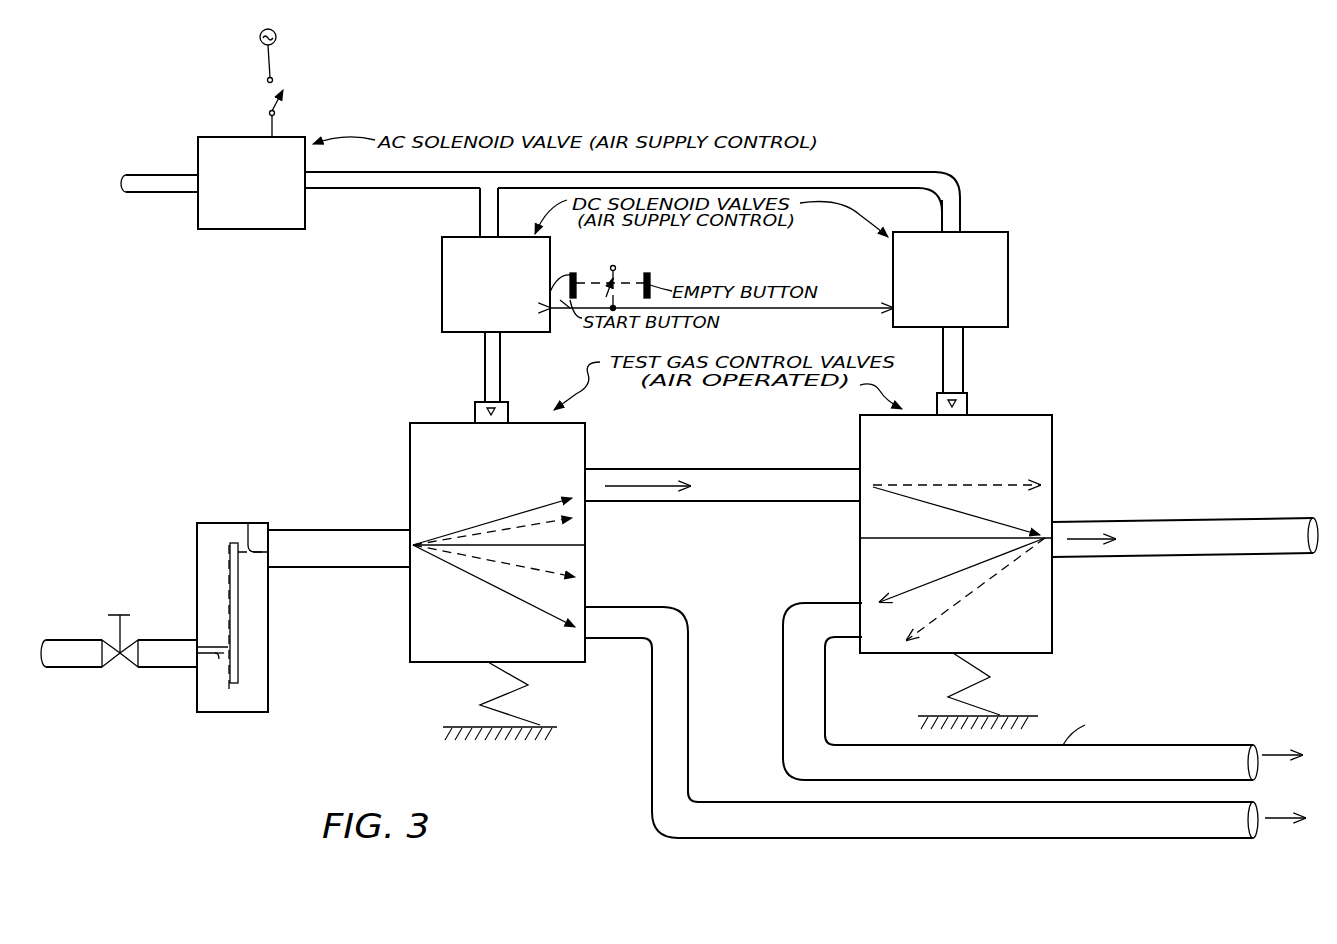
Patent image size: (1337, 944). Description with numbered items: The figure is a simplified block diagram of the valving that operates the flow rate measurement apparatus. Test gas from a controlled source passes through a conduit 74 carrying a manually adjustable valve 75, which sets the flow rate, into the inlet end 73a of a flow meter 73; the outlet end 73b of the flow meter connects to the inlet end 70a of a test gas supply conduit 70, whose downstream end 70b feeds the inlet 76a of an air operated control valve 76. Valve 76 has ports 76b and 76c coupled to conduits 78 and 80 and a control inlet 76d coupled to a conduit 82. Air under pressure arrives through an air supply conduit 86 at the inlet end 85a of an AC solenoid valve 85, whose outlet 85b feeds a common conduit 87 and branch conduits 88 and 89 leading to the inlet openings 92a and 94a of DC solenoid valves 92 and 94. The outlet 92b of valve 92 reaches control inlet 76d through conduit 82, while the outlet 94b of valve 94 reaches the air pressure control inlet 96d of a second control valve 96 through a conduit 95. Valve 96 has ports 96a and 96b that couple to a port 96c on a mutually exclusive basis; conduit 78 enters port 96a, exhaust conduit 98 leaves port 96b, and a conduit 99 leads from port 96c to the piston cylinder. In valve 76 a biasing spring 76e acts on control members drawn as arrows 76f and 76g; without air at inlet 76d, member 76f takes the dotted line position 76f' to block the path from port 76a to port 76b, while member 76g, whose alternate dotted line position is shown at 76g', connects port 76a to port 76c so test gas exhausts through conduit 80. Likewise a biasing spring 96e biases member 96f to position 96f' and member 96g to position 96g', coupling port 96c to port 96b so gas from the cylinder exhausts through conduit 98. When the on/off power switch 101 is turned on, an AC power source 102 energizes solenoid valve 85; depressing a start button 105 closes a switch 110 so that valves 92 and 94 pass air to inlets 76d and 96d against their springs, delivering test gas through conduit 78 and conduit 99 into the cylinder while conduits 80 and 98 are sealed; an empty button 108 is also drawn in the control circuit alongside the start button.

The AC power source 102 is at (277, 38).
The on/off power switch 101 is at (280, 106).
The AC solenoid valve 85 is at (283, 169).
The inlet end 85a is at (194, 175).
The outlet 85b is at (312, 172).
The air supply conduit 86 is at (160, 194).
The common conduit 87 is at (448, 172).
The branch conduit 88 is at (498, 209).
The branch conduit 89 is at (942, 204).
The DC solenoid valve 92 is at (477, 267).
The inlet opening 92a is at (480, 237).
The outlet 92b is at (503, 335).
The DC solenoid valve 94 is at (940, 261).
The inlet opening 94a is at (962, 236).
The outlet 94b is at (942, 337).
The conduit 95 is at (963, 361).
The conduit 82 is at (485, 367).
The start button 105 is at (560, 283).
The empty button 108 is at (651, 277).
The switch 110 is at (612, 266).
The air operated control valve 76 is at (527, 423).
The inlet 76a is at (410, 540).
The port 76b is at (590, 470).
The port 76c is at (590, 640).
The air pressure control inlet 76d is at (475, 418).
The biasing spring 76e is at (501, 693).
The control member 76f is at (492, 514).
The dotted line position 76f' is at (492, 518).
The control member 76g is at (494, 586).
The alternate flow path of valve 76 76g' is at (494, 590).
The conduit 78 is at (676, 470).
The conduit 80 is at (680, 616).
The flow meter 73 is at (223, 528).
The inlet end 73a is at (212, 674).
The outlet end 73b is at (248, 522).
The test gas supply conduit 70 is at (355, 530).
The inlet end 70a is at (276, 570).
The downstream end 70b is at (410, 567).
The conduit 74 is at (70, 655).
The manually adjustable valve 75 is at (122, 612).
The control valve 96 is at (898, 446).
The port 96a is at (860, 505).
The port 96b is at (862, 638).
The port 96c is at (1055, 520).
The air pressure control inlet 96d is at (967, 406).
The biasing spring 96e is at (962, 693).
The control member 96f is at (956, 493).
The position of member 96f 96f' is at (956, 468).
The control member 96g is at (962, 575).
The position of member 96g 96g' is at (976, 590).
The exhaust conduit 98 is at (1086, 726).
The conduit 99 is at (1180, 520).